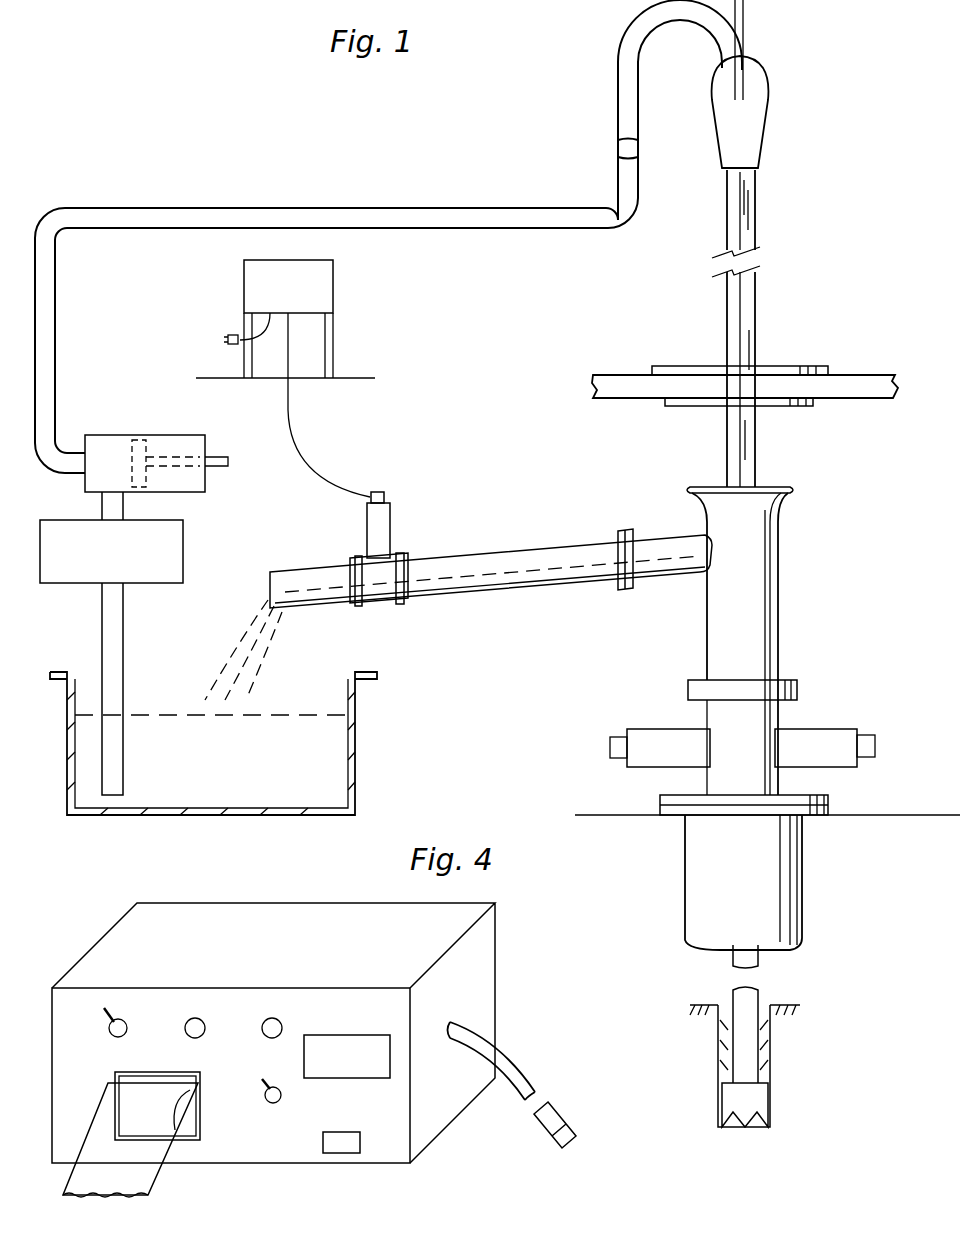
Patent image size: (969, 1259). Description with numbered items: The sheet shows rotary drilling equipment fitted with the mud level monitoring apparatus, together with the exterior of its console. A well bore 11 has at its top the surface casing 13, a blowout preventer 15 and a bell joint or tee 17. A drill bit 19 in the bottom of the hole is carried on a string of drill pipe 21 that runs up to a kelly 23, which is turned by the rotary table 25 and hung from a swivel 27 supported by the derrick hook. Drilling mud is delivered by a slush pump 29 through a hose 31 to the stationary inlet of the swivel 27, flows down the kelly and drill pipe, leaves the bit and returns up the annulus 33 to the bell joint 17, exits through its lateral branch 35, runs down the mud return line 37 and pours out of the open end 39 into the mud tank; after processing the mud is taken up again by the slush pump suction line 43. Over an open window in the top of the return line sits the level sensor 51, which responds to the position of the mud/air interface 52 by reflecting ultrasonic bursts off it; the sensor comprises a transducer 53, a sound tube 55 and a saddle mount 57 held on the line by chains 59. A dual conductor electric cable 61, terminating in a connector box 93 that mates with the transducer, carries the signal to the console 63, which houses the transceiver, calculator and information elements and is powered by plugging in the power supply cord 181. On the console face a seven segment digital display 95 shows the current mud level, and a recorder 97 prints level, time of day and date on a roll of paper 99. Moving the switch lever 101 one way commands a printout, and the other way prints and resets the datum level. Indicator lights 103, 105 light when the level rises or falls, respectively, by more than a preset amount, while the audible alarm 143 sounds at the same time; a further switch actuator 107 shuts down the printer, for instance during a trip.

In FIG. 1, the well bore 11 is at (775, 1048).
In FIG. 1, the surface casing 13 is at (782, 880).
In FIG. 1, the blowout preventer 15 is at (777, 717).
In FIG. 1, the bell joint or tee 17 is at (772, 558).
In FIG. 1, the drill bit 19 is at (752, 1102).
In FIG. 1, the drill pipe 21 is at (760, 992).
In FIG. 1, the kelly 23 is at (755, 328).
In FIG. 1, the rotary table 25 is at (685, 365).
In FIG. 1, the swivel 27 is at (748, 135).
In FIG. 1, the slush pump 29 is at (125, 435).
In FIG. 1, the hose 31 is at (56, 350).
In FIG. 1, the annulus 33 is at (728, 1003).
In FIG. 1, the lateral branch 35 is at (665, 538).
In FIG. 1, the mud return line 37 is at (573, 540).
In FIG. 1, the open end 39 is at (265, 568).
In FIG. 1, the slush pump suction line 43 is at (88, 500).
In FIG. 1, the level sensor 51 is at (430, 604).
In FIG. 1, the mud/air interface 52 is at (520, 565).
In FIG. 1, the transducer 53 is at (378, 492).
In FIG. 1, the sound tube 55 is at (385, 515).
In FIG. 1, the saddle mount 57 is at (405, 566).
In FIG. 1, the chains 59 is at (376, 604).
In FIG. 1, the dual conductor electric cable 61 is at (300, 414).
In FIG. 4, the dual conductor electric cable 61 is at (525, 1078).
In FIG. 1, the console 63 is at (333, 305).
In FIG. 4, the console 63 is at (287, 913).
In FIG. 4, the connector box 93 is at (572, 1138).
In FIG. 4, the digital display 95 is at (350, 1080).
In FIG. 4, the recorder 97 is at (108, 1095).
In FIG. 4, the roll of paper 99 is at (165, 1176).
In FIG. 4, the switch lever 101 is at (120, 1019).
In FIG. 4, the indicator light 103 is at (195, 1018).
In FIG. 4, the indicator light 105 is at (272, 1018).
In FIG. 4, the switch actuator 107 is at (265, 1108).
In FIG. 4, the audible alarm 143 is at (323, 1145).
In FIG. 1, the power supply cord 181 is at (228, 338).